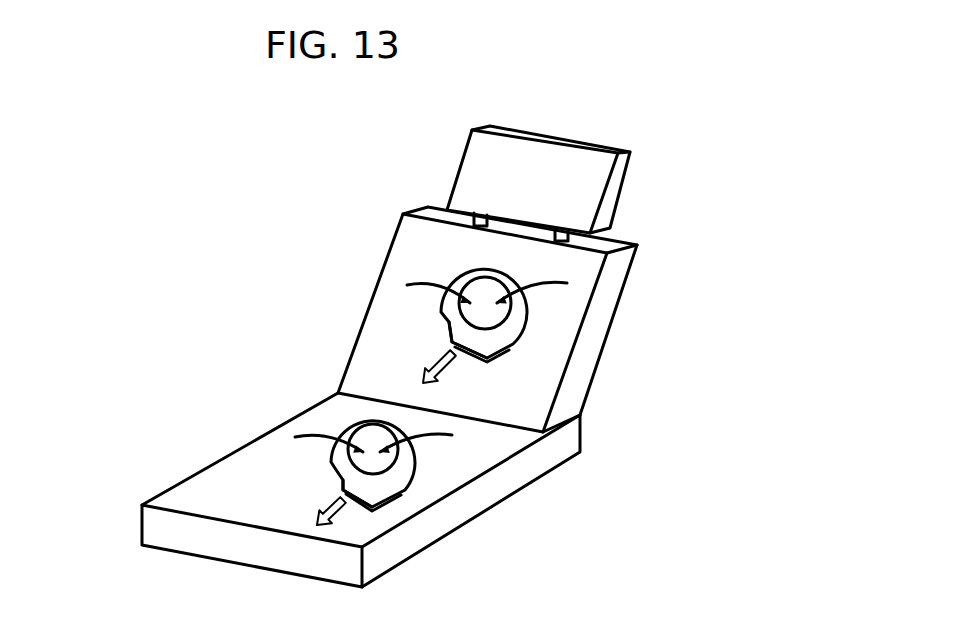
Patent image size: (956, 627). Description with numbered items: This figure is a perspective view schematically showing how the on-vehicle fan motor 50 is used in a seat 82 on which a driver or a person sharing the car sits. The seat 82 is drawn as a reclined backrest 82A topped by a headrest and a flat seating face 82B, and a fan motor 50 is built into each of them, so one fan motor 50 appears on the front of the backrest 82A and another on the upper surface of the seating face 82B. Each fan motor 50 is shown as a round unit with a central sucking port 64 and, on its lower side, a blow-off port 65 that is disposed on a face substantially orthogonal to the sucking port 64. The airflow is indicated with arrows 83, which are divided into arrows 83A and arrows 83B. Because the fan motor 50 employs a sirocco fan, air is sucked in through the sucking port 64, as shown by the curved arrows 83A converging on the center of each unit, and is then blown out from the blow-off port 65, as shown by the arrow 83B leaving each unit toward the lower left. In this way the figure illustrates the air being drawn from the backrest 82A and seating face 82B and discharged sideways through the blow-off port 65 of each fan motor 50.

The fan motor 50 is at (487, 338).
The sucking port 64 is at (495, 312).
The blow-off port 65 is at (483, 355).
The seat 82 is at (389, 356).
The backrest 82A is at (377, 338).
The seating face 82B is at (335, 408).
The arrows 83 is at (507, 366).
The arrows indicating sucked air 83A is at (545, 284).
The arrow indicating blown air 83B is at (447, 373).